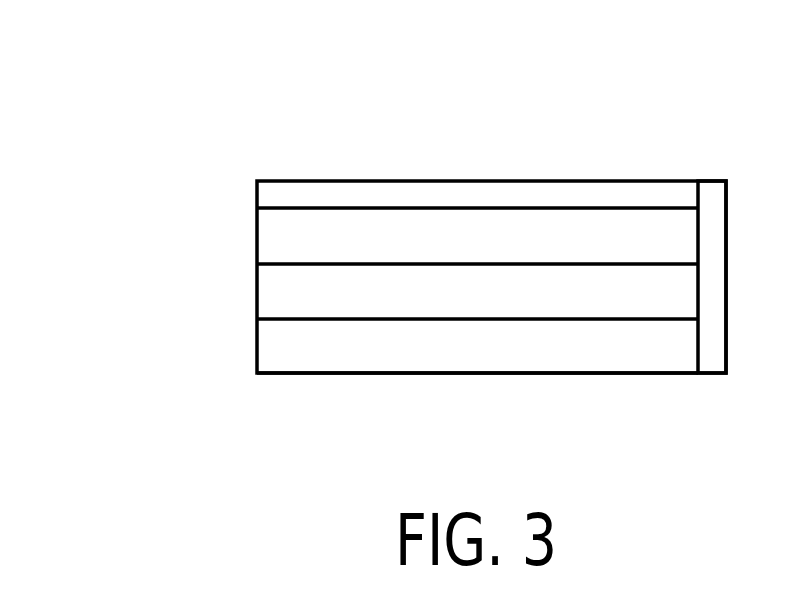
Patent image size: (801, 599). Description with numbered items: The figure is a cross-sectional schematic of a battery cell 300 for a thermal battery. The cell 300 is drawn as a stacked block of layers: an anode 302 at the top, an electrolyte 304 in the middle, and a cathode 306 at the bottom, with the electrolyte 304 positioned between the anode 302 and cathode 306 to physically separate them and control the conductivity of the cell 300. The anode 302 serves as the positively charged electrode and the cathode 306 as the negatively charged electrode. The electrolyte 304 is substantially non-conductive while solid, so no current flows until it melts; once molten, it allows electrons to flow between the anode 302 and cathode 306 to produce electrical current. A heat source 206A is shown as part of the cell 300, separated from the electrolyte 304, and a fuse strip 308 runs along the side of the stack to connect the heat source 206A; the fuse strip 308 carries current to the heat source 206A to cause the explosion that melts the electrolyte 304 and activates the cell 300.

The battery cell 300 is at (133, 83).
The heat source 206A is at (257, 185).
The anode 302 is at (257, 232).
The electrolyte 304 is at (257, 289).
The cathode 306 is at (257, 345).
The fuse strip 308 is at (727, 276).